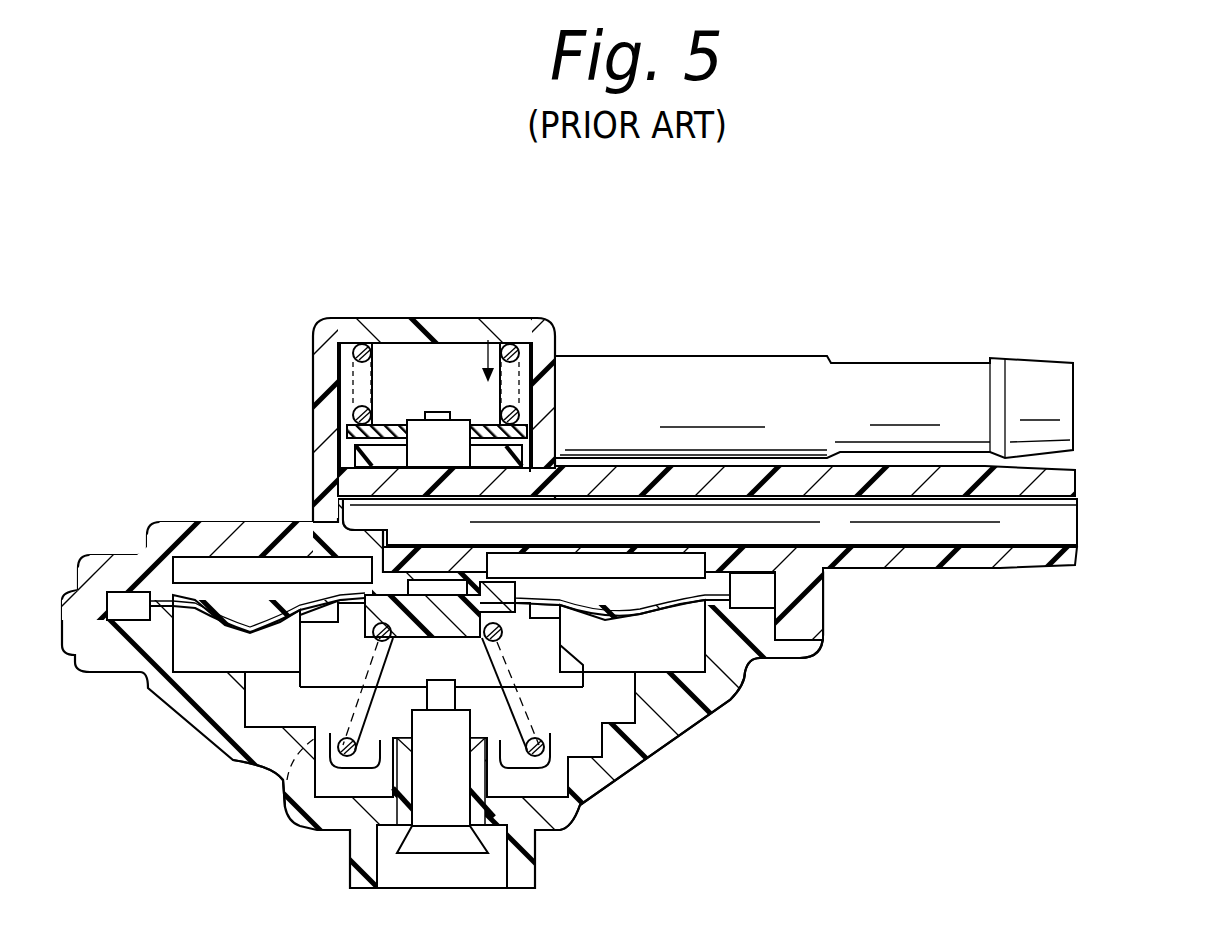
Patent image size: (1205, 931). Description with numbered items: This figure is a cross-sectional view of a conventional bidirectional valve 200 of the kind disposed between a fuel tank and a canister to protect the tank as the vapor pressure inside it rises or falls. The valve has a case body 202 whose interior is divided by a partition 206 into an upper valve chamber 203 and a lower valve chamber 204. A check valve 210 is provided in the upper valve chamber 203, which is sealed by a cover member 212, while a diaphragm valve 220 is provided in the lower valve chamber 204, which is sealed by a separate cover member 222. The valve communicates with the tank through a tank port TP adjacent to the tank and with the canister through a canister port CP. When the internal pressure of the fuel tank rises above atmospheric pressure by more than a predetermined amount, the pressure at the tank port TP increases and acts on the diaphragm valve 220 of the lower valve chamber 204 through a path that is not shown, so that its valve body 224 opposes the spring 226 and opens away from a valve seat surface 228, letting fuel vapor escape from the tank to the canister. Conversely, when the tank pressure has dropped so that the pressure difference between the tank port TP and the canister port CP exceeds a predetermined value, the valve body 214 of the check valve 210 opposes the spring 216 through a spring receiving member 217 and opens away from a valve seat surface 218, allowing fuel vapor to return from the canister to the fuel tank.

The bidirectional valve 200 is at (648, 262).
The case body 202 is at (312, 405).
The upper valve chamber 203 is at (386, 375).
The lower valve chamber 204 is at (233, 598).
The partition 206 is at (558, 462).
The check valve 210 is at (496, 406).
The cover member 212 is at (405, 330).
The valve body 214 is at (437, 412).
The spring 216 is at (556, 352).
The spring receiving member 217 is at (488, 340).
The valve seat surface 218 is at (375, 465).
The diaphragm valve 220 is at (573, 697).
The cover member 222 is at (686, 712).
The valve body 224 is at (414, 640).
The spring 226 is at (286, 778).
The valve seat surface 228 is at (407, 576).
The tank port TP is at (1077, 405).
The canister port CP is at (1060, 518).